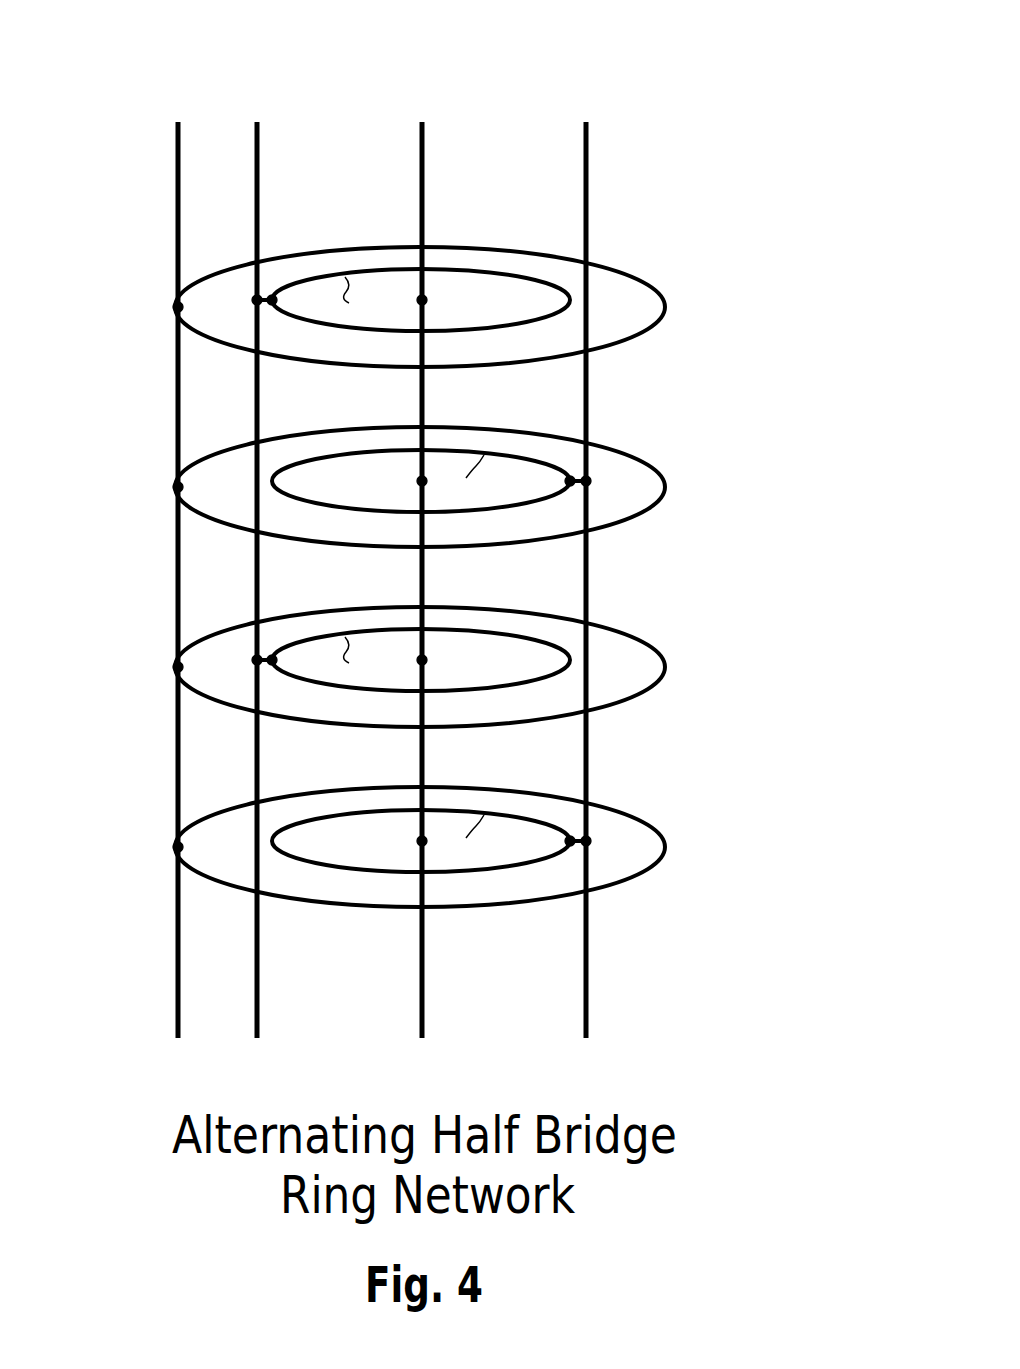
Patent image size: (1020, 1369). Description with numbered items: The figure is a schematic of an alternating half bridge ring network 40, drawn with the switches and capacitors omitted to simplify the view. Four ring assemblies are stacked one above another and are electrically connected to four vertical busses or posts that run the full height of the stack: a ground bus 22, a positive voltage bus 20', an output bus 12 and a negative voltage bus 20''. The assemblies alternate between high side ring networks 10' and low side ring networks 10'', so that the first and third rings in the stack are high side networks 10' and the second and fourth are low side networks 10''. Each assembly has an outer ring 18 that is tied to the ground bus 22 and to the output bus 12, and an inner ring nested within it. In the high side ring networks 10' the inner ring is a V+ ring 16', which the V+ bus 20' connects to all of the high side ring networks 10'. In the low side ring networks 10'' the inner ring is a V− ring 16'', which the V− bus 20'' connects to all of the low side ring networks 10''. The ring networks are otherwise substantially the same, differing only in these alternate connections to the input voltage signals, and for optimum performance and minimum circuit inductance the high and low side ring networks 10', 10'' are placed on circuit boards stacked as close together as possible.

The alternating half bridge ring network 40 is at (205, 98).
The high side ring network 10' is at (514, 480).
The low side ring network 10'' is at (528, 661).
The outer ring 18 is at (627, 273).
The V+ ring 16' is at (411, 480).
The V− ring 16'' is at (431, 661).
The ground bus 22 is at (176, 1000).
The positive voltage bus 20' is at (246, 612).
The negative voltage bus 20'' is at (580, 612).
The output bus 12 is at (421, 995).